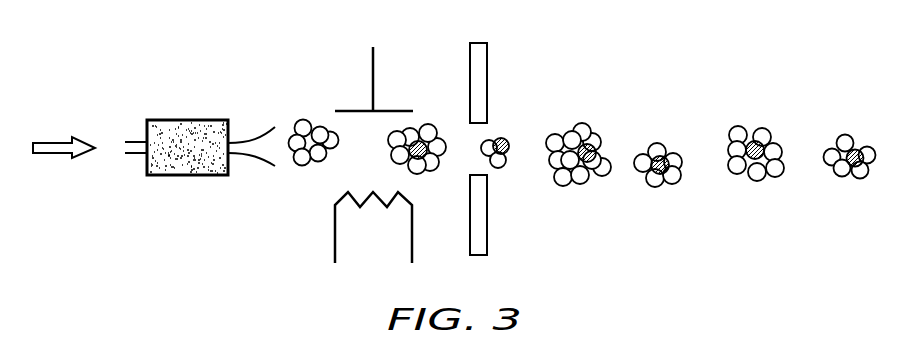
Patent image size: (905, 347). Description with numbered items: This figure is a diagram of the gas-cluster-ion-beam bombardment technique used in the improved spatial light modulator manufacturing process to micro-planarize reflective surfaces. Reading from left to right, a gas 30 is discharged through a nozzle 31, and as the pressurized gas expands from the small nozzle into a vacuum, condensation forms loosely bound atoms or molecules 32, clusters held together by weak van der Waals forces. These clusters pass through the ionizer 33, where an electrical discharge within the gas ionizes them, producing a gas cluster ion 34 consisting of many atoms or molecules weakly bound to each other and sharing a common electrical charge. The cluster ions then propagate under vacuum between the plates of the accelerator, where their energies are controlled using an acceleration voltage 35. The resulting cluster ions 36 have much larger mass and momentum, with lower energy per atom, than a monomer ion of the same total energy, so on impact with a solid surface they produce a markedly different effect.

The gas 30 is at (50, 103).
The nozzle 31 is at (185, 175).
The loosely bound atoms or molecules 32 is at (303, 117).
The ionizer 33 is at (333, 235).
The ionized gas cluster 34 is at (430, 123).
The acceleration voltage 35 is at (488, 80).
The cluster ions 36 is at (597, 132).